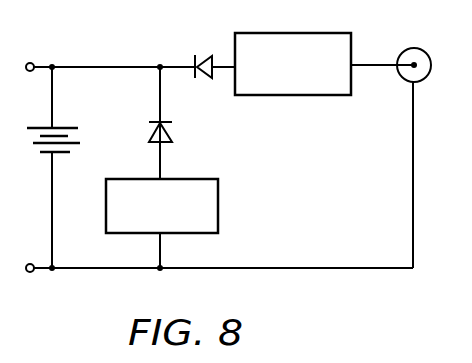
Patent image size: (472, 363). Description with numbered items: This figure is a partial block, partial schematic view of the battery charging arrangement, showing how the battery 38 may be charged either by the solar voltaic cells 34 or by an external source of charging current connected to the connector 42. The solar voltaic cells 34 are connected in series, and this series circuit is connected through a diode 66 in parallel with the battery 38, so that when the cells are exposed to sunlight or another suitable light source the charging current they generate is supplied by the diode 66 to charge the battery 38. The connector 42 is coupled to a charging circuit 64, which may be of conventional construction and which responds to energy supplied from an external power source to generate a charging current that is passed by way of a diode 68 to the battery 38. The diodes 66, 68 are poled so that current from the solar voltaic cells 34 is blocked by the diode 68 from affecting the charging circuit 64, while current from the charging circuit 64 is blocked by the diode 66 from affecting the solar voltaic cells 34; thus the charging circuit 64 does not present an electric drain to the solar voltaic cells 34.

The solar voltaic cells 34 is at (218, 207).
The battery 38 is at (37, 143).
The connector 42 is at (434, 35).
The charging circuit 64 is at (333, 95).
The diode 66 is at (171, 126).
The diode 68 is at (201, 78).